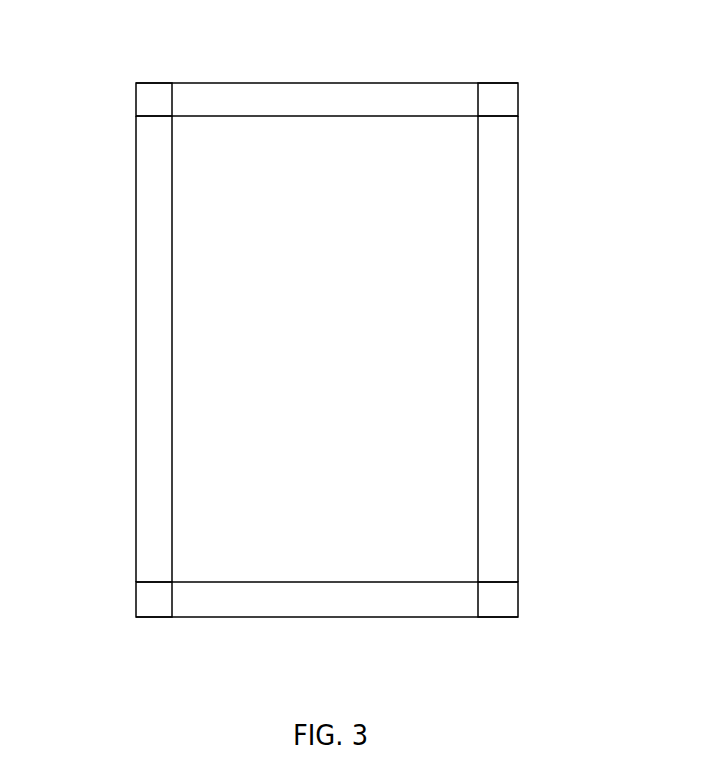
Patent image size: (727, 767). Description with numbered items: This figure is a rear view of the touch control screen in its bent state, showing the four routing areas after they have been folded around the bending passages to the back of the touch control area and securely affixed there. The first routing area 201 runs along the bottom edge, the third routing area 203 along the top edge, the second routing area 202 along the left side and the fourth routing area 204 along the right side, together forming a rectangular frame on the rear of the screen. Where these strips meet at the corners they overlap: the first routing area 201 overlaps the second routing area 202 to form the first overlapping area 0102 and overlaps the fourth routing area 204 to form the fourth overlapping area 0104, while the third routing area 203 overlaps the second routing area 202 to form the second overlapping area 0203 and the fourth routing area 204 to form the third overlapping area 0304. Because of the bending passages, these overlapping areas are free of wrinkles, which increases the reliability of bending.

The first routing area 201 is at (335, 600).
The second routing area 202 is at (152, 310).
The third routing area 203 is at (320, 98).
The fourth routing area 204 is at (503, 368).
The first overlapping area 0102 is at (153, 600).
The second overlapping area 0203 is at (153, 98).
The third overlapping area 0304 is at (502, 98).
The fourth overlapping area 0104 is at (505, 601).